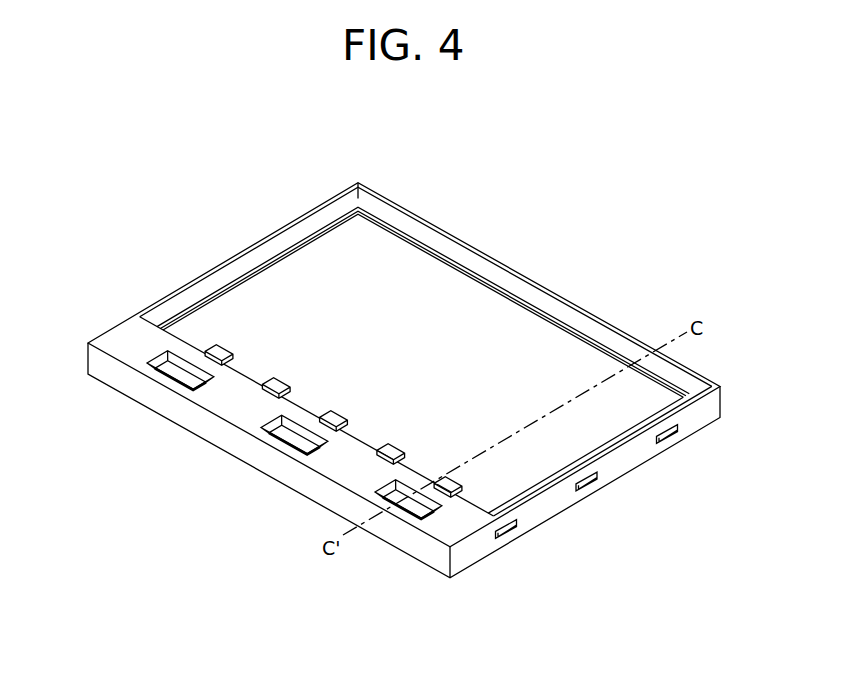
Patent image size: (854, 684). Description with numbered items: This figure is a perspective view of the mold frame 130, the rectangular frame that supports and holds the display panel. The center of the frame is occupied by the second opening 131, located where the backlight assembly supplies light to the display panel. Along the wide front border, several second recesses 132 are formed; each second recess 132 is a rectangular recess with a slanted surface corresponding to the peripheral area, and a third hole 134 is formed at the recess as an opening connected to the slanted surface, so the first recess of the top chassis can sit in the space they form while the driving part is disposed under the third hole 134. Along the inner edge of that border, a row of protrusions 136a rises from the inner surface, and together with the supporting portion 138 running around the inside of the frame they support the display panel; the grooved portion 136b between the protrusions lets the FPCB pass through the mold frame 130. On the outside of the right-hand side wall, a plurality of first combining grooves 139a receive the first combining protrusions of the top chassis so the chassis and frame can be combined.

The mold frame 130 is at (212, 251).
The second opening 131 is at (441, 364).
The second recess 132 is at (268, 432).
The third hole 134 is at (281, 437).
The protrusion 136a is at (332, 414).
The grooved portion 136b is at (311, 404).
The supporting portion 138 is at (331, 218).
The first combining groove 139a is at (674, 437).